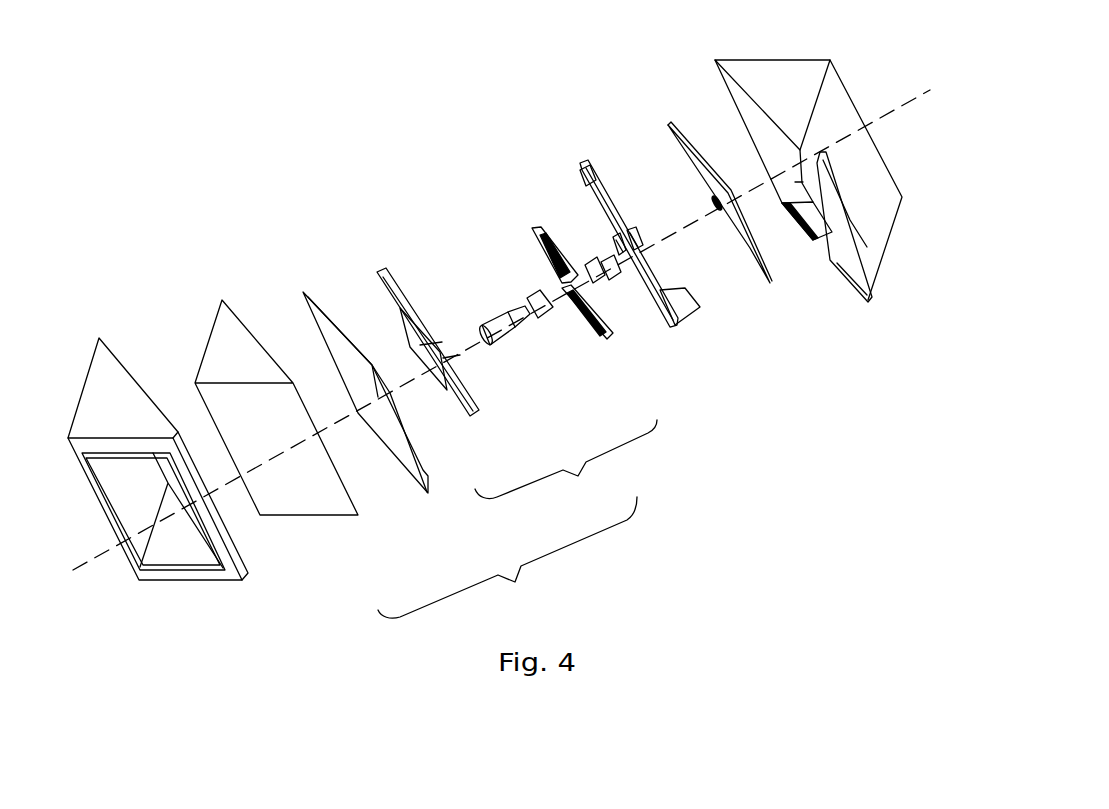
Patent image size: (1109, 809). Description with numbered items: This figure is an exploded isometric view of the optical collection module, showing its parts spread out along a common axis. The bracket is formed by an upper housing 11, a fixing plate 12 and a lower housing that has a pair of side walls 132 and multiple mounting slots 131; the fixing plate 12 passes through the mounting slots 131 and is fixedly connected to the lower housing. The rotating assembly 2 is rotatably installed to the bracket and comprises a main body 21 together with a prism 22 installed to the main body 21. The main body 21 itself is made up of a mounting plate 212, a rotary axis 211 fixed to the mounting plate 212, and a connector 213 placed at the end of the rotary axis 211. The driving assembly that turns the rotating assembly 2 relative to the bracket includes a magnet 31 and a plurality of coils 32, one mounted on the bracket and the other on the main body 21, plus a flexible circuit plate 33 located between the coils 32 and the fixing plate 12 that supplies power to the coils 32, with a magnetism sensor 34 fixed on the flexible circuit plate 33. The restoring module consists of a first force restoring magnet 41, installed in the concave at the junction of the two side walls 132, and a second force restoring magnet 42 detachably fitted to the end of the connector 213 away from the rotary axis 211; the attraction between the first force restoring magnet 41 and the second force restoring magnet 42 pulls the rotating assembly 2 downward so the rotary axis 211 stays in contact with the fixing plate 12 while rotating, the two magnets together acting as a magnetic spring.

The rotating assembly 2 is at (507, 558).
The upper housing 11 is at (125, 408).
The fixing plate 12 is at (765, 250).
The mounting slots 131 is at (862, 230).
The side walls 132 is at (877, 182).
The main body 21 is at (566, 467).
The rotary axis 211 is at (497, 328).
The mounting plate 212 is at (372, 366).
The connector 213 is at (550, 311).
The prism 22 is at (328, 498).
The magnet 31 is at (405, 285).
The coils 32 is at (542, 223).
The flexible circuit plate 33 is at (645, 263).
The magnetism sensor 34 is at (592, 175).
The first force restoring magnet 41 is at (627, 255).
The second force restoring magnet 42 is at (612, 268).